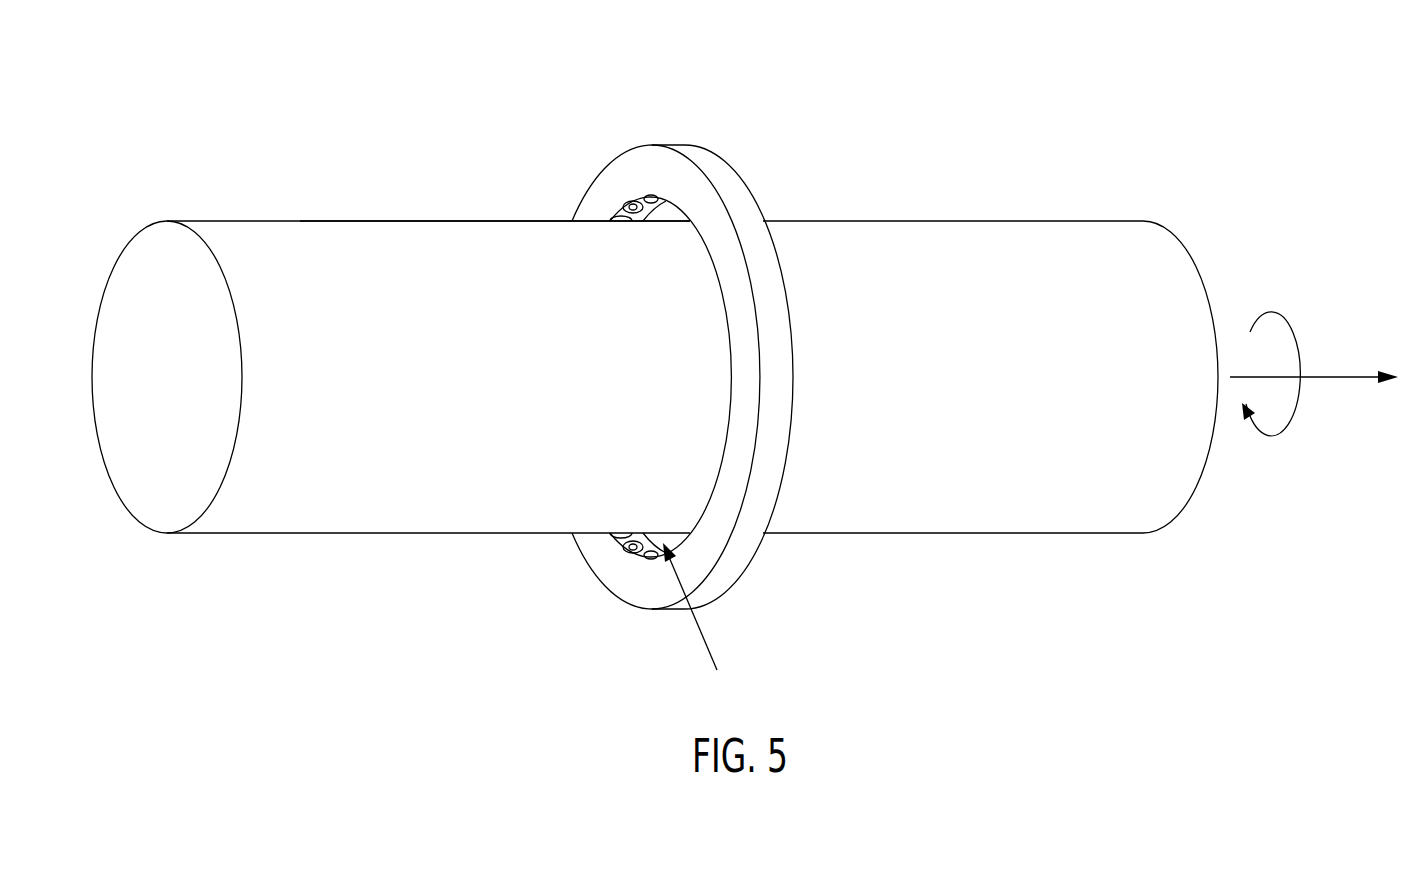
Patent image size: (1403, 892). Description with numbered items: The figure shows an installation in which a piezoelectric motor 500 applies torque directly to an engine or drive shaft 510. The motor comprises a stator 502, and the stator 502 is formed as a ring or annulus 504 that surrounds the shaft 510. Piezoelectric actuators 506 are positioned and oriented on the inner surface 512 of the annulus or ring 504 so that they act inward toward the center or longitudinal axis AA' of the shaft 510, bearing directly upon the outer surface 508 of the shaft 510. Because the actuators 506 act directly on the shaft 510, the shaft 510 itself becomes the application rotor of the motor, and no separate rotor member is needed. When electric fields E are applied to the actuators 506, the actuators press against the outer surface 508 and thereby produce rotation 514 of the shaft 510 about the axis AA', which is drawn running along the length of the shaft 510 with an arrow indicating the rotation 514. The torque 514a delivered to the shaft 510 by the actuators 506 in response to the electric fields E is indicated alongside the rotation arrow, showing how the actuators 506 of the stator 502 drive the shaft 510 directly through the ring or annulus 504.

The piezoelectric motor 500 is at (1160, 72).
The stator 502 is at (732, 192).
The ring or annulus 504 is at (746, 548).
The actuators 506 is at (617, 533).
The outer surface 508 is at (343, 247).
The shaft 510 is at (482, 247).
The inner surface 512 is at (620, 208).
The rotation 514 is at (1297, 412).
The torque 514a is at (1270, 440).
The longitudinal axis AA' is at (1314, 332).
The electric fields E is at (703, 643).